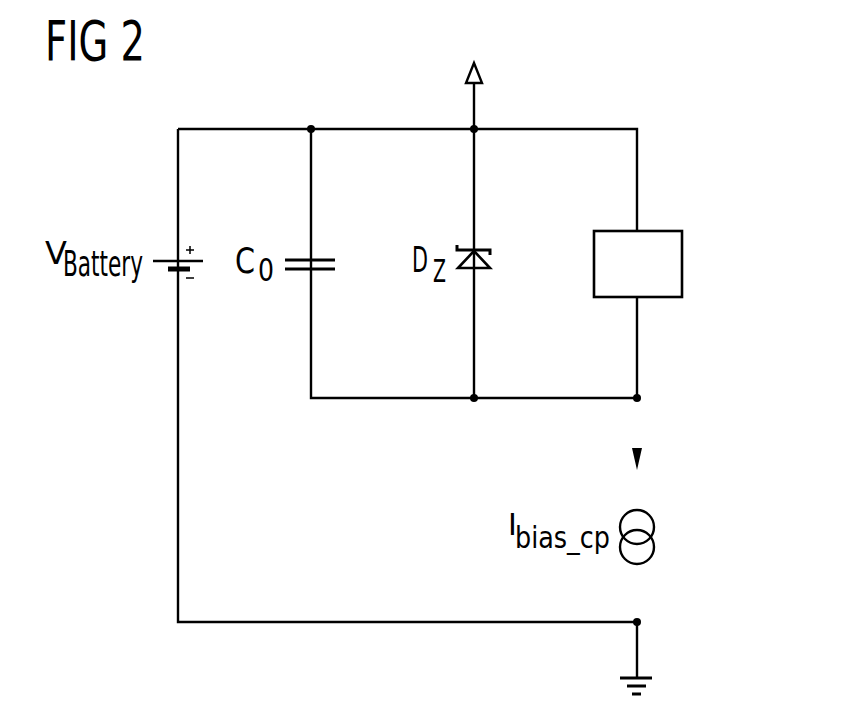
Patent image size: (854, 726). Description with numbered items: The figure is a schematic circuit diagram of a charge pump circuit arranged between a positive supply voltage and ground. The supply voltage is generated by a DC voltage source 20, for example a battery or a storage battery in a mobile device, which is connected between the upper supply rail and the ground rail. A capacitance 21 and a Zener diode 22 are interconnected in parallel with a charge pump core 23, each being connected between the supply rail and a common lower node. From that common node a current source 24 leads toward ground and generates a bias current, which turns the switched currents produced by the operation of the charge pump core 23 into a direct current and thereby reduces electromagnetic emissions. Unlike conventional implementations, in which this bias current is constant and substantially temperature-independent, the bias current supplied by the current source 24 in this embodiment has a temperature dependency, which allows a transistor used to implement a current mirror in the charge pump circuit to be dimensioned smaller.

The DC voltage source 20 is at (170, 258).
The capacitance 21 is at (320, 256).
The Zener diode 22 is at (477, 248).
The charge pump core 23 is at (684, 262).
The current source 24 is at (655, 525).